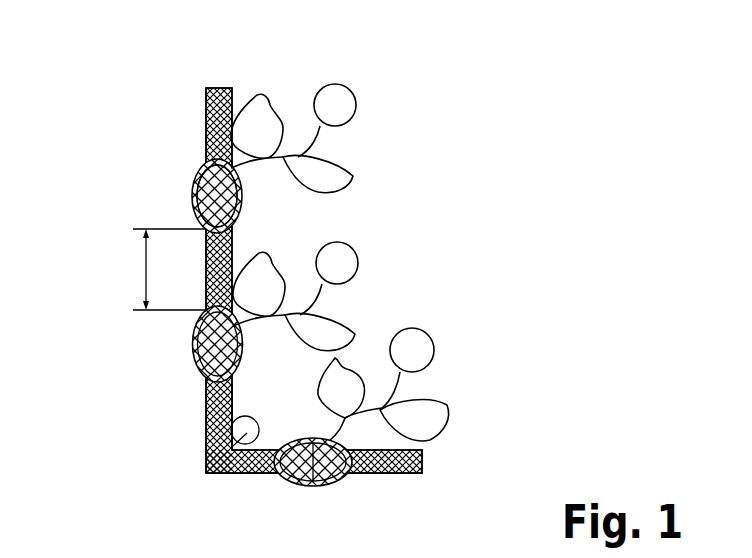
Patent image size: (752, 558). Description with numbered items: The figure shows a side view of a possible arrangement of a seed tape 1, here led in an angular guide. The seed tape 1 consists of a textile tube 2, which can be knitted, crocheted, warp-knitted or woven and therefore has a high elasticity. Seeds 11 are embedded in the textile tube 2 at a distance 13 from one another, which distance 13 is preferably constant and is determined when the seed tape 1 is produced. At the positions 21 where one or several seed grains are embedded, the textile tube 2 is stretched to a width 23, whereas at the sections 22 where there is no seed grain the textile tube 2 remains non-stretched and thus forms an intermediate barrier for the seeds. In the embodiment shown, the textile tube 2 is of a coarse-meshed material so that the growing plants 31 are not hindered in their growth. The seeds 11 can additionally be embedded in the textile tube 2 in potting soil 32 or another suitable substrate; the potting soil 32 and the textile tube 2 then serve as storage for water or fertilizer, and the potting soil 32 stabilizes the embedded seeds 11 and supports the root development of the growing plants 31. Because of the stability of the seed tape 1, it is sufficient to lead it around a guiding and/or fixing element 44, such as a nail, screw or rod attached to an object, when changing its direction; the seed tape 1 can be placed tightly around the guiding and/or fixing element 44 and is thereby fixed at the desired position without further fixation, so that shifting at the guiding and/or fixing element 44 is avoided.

The seed tape 1 is at (184, 99).
The textile tube 2 is at (229, 88).
The seeds 11 is at (200, 173).
The distance 13 is at (151, 269).
The positions 21 is at (193, 193).
The sections 22 is at (230, 248).
The width 23 is at (297, 483).
The growing plants 31 is at (338, 177).
The potting soil 32 is at (207, 408).
The guiding and/or fixing element 44 is at (206, 456).